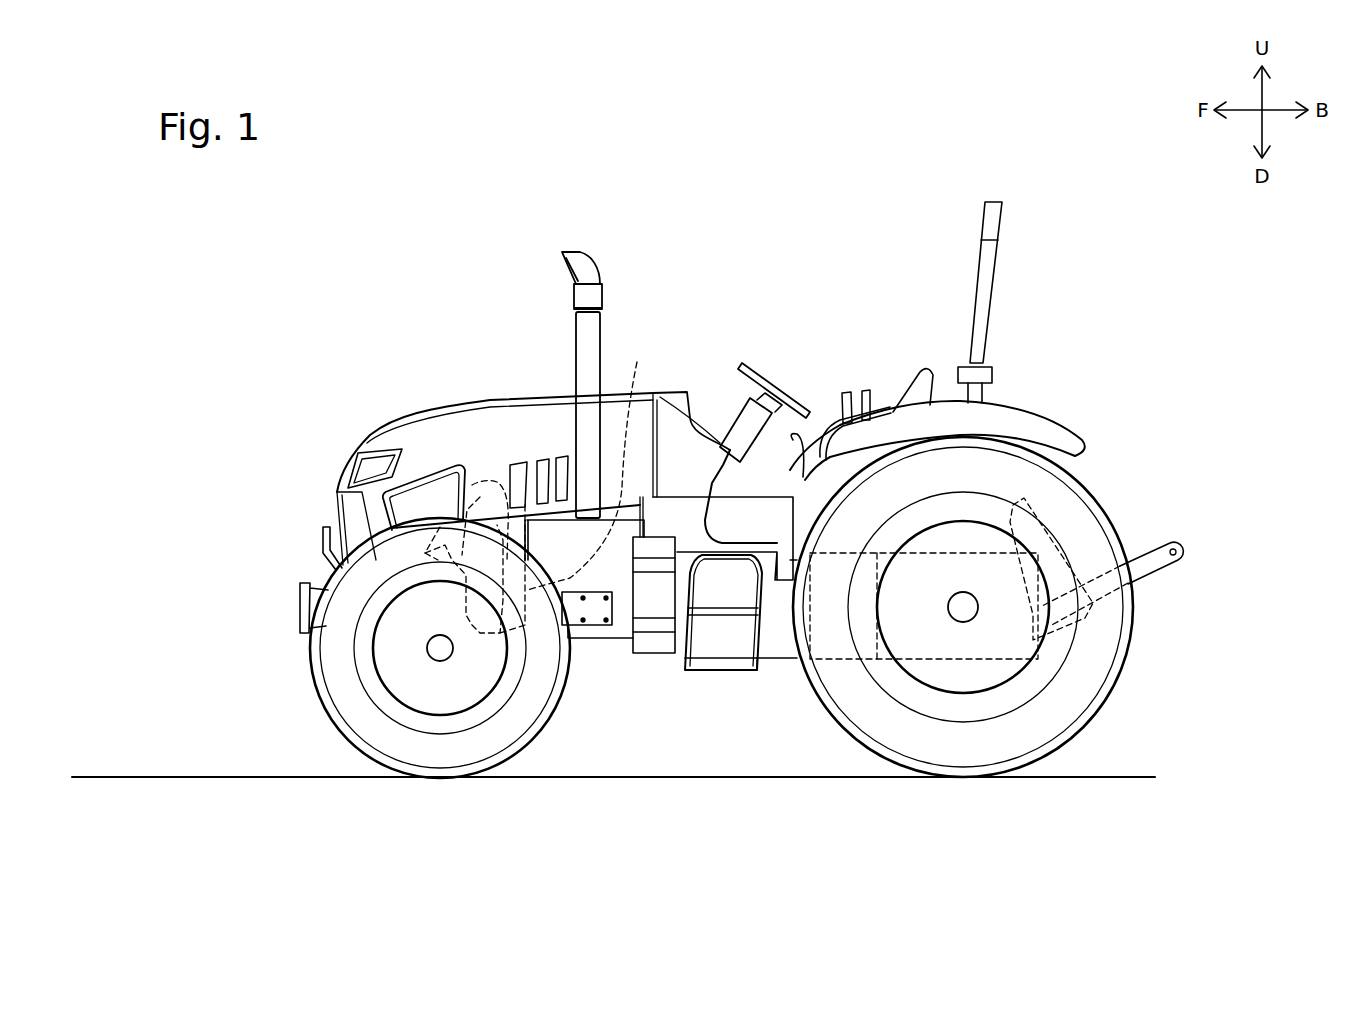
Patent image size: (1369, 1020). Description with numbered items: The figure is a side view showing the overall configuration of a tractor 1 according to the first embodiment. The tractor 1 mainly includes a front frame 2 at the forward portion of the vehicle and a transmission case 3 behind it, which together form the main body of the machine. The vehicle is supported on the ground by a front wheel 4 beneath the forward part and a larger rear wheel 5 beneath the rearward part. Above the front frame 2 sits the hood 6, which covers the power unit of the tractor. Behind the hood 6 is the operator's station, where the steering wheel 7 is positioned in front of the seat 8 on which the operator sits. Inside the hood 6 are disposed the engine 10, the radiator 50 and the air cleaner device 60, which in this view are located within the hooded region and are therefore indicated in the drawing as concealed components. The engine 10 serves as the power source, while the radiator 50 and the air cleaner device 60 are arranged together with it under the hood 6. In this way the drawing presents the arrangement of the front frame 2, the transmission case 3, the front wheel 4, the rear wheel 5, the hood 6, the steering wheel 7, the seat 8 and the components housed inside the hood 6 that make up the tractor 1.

The tractor 1 is at (724, 520).
The front frame 2 is at (593, 613).
The transmission case 3 is at (778, 643).
The front wheel 4 is at (430, 757).
The rear wheel 5 is at (962, 757).
The hood 6 is at (500, 423).
The steering wheel 7 is at (772, 395).
The seat 8 is at (930, 375).
The engine 10 is at (618, 633).
The radiator 50 is at (577, 484).
The air cleaner device 60 is at (413, 530).